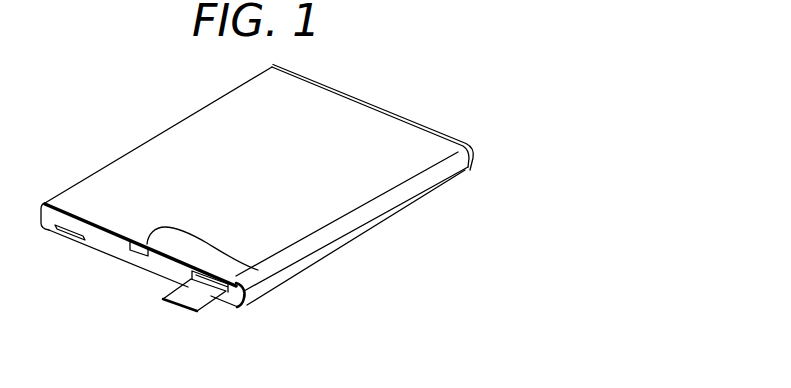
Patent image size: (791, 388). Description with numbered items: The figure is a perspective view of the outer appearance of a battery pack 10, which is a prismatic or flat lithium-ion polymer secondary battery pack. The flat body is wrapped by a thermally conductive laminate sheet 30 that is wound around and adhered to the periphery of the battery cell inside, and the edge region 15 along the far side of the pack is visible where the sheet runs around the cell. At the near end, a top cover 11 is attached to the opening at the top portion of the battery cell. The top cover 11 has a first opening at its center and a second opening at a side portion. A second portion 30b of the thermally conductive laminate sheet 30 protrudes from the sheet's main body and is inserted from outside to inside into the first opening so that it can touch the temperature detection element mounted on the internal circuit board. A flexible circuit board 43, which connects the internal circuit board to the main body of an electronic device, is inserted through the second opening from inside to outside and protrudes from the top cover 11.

The battery pack 10 is at (423, 293).
The top cover 11 is at (93, 240).
The sealing edge 15 is at (420, 125).
The thermally conductive laminate sheet 30 is at (172, 133).
The second portion 30b is at (258, 270).
The flexible circuit board 43 is at (208, 291).